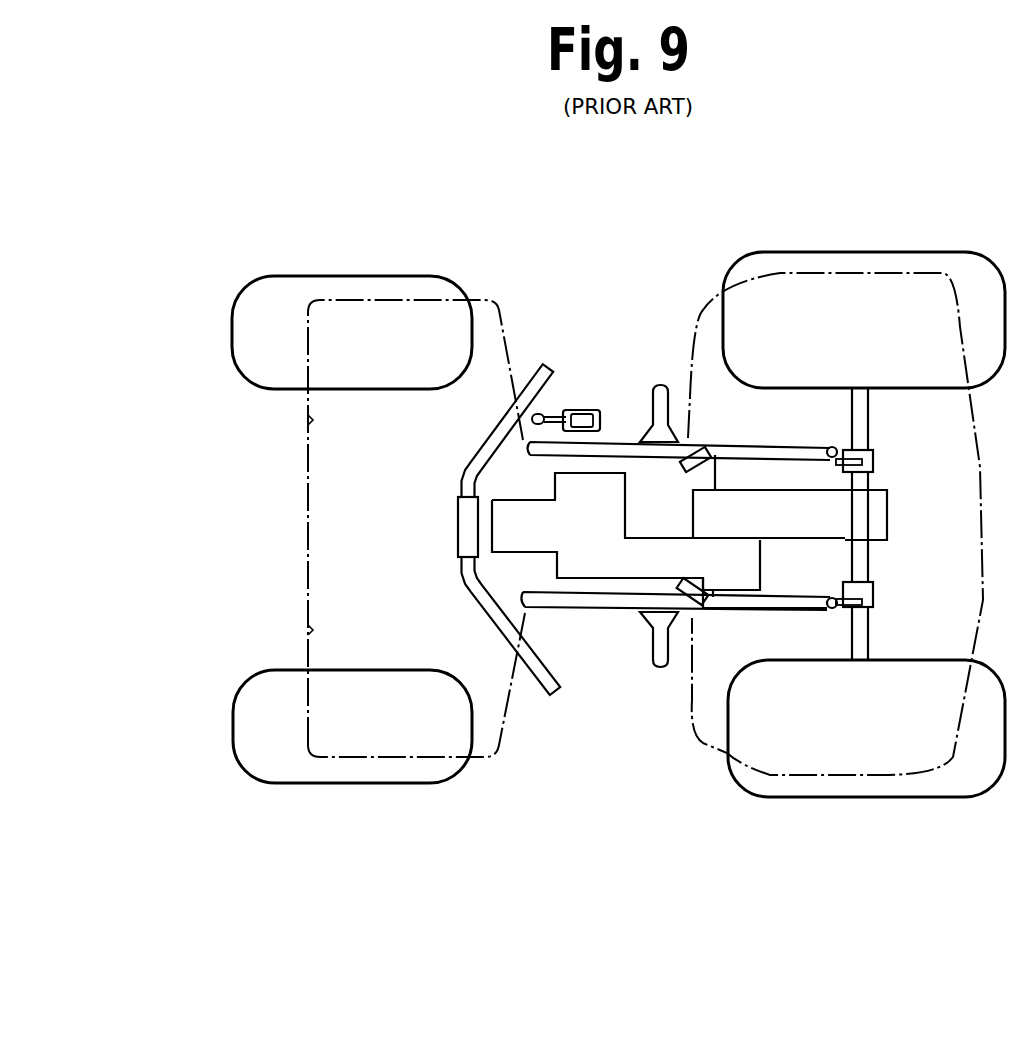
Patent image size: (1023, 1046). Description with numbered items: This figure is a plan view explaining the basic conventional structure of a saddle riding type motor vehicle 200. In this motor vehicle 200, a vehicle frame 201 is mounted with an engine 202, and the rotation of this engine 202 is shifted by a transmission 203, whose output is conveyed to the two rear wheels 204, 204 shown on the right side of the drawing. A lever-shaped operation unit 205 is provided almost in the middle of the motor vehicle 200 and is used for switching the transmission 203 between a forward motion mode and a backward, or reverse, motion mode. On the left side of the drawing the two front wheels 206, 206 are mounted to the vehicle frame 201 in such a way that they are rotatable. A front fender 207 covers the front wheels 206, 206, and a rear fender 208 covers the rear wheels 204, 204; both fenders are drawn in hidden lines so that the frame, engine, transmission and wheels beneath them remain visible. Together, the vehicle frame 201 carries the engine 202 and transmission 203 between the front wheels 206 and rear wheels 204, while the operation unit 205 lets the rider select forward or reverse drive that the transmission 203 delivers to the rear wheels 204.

The motor vehicle 200 is at (226, 180).
The vehicle frame 201 is at (547, 612).
The engine 202 is at (583, 578).
The transmission 203 is at (768, 490).
The rear wheels 204 is at (910, 252).
The lever-shaped operation unit 205 is at (556, 404).
The front wheels 206 is at (365, 277).
The front fender 207 is at (411, 300).
The rear fender 208 is at (812, 273).